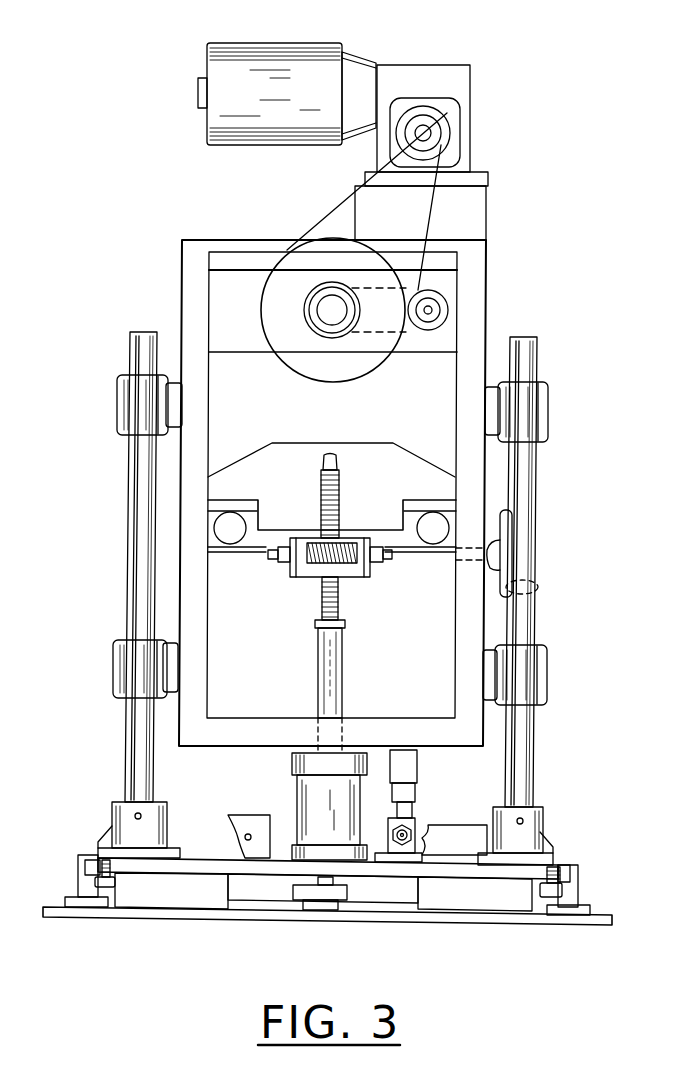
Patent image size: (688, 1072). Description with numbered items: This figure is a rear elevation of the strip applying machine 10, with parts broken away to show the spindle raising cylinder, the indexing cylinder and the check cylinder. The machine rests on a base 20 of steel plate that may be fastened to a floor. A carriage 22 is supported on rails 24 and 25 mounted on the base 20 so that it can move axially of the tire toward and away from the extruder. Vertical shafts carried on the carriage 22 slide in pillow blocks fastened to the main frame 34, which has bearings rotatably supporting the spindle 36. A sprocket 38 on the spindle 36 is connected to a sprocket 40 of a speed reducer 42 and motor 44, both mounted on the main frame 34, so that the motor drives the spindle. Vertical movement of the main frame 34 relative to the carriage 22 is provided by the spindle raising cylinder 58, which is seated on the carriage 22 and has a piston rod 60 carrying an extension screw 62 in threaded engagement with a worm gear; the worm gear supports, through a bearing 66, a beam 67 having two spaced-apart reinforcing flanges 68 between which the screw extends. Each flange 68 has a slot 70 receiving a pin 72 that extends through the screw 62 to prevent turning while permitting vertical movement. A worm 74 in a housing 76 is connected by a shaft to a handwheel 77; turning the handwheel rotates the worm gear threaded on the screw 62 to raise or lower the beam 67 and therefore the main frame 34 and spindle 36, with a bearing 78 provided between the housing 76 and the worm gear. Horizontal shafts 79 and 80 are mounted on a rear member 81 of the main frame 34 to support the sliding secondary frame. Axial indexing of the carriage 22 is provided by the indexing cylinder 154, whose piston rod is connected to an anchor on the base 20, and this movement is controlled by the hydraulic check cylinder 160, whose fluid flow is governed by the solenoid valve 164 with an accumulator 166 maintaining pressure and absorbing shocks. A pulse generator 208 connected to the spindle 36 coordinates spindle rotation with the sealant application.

The strip applying machine 10 is at (140, 270).
The base 20 is at (498, 915).
The carriage 22 is at (533, 872).
The rail 24 is at (578, 887).
The rail 25 is at (80, 885).
The main frame 34 is at (467, 613).
The spindle 36 is at (323, 313).
The sprocket 38 is at (317, 250).
The sprocket 40 is at (447, 118).
The speed reducer 42 is at (462, 87).
The motor 44 is at (290, 68).
The spindle raising cylinder 58 is at (313, 797).
The piston rod 60 is at (337, 668).
The extension screw 62 is at (318, 617).
The bearing 66 is at (345, 542).
The beam 67 is at (428, 500).
The reinforcing flanges 68 is at (378, 528).
The slot 70 is at (330, 458).
The pin 72 is at (277, 528).
The worm 74 is at (325, 552).
The housing 76 is at (353, 582).
The handwheel 77 is at (502, 523).
The bearing 78 is at (362, 577).
The horizontal shaft 79 is at (425, 542).
The horizontal shaft 80 is at (237, 538).
The rear member 81 is at (210, 542).
The indexing cylinder 154 is at (250, 820).
The hydraulic check cylinder 160 is at (412, 828).
The solenoid valve 164 is at (407, 763).
The accumulator 166 is at (422, 840).
The pulse generator 208 is at (450, 302).